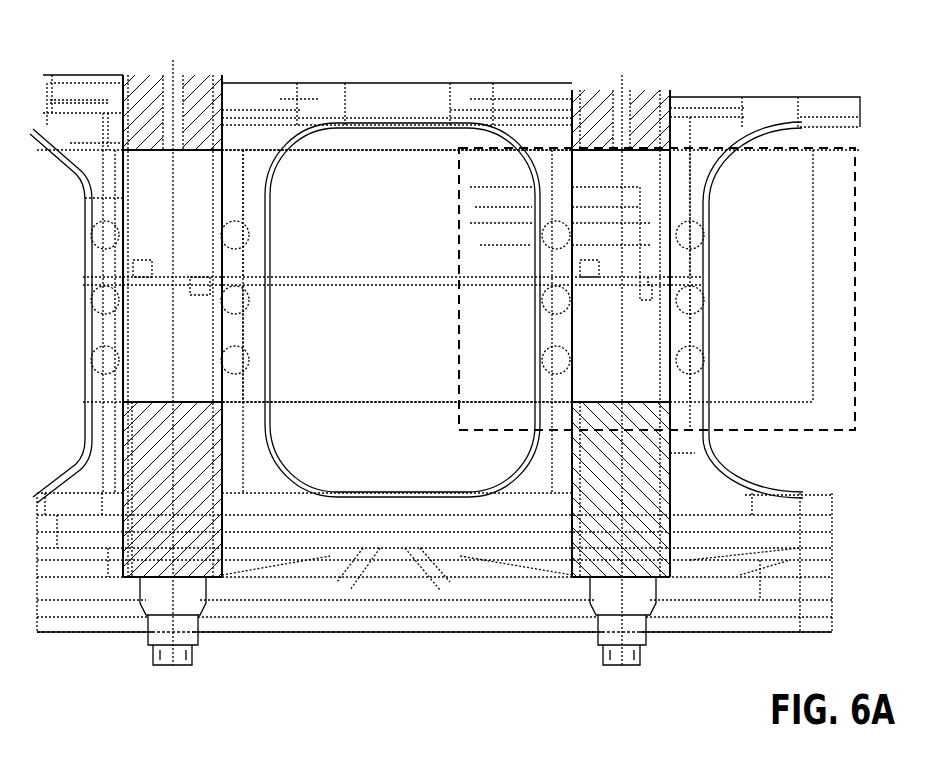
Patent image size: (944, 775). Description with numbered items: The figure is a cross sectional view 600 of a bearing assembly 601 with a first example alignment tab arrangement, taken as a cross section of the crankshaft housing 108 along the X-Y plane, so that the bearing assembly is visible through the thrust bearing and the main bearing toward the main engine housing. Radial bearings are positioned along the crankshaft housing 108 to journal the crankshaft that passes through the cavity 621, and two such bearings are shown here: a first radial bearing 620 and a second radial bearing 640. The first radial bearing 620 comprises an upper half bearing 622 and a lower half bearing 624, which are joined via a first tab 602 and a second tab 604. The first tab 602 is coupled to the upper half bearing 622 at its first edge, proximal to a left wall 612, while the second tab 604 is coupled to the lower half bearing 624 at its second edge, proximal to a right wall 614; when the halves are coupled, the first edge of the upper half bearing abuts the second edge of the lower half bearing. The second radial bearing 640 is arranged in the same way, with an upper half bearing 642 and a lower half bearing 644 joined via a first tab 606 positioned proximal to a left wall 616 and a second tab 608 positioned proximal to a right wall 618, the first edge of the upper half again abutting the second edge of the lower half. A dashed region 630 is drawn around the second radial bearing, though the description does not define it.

The cross sectional view 600 is at (786, 30).
The bearing assembly 601 is at (460, 50).
The first tab 602 is at (138, 262).
The second tab 604 is at (205, 296).
The first tab 606 is at (586, 262).
The second tab 608 is at (655, 298).
The left wall 612 is at (125, 367).
The right wall 614 is at (222, 373).
The left wall 616 is at (574, 366).
The right wall 618 is at (670, 373).
The first radial bearing 620 is at (63, 324).
The cavity 621 is at (411, 339).
The upper half bearing 622 is at (240, 188).
The lower half bearing 624 is at (240, 343).
The detail region 630 is at (862, 418).
The second radial bearing 640 is at (622, 665).
The upper half bearing 642 is at (684, 210).
The lower half bearing 644 is at (680, 370).
The crankshaft housing 108 is at (335, 633).